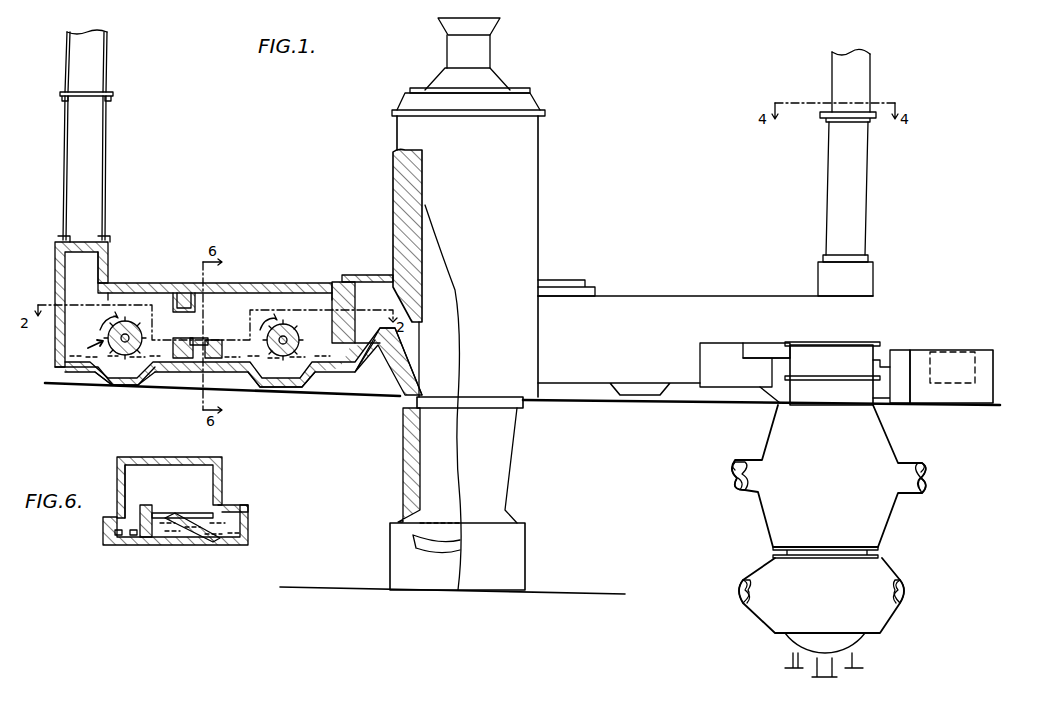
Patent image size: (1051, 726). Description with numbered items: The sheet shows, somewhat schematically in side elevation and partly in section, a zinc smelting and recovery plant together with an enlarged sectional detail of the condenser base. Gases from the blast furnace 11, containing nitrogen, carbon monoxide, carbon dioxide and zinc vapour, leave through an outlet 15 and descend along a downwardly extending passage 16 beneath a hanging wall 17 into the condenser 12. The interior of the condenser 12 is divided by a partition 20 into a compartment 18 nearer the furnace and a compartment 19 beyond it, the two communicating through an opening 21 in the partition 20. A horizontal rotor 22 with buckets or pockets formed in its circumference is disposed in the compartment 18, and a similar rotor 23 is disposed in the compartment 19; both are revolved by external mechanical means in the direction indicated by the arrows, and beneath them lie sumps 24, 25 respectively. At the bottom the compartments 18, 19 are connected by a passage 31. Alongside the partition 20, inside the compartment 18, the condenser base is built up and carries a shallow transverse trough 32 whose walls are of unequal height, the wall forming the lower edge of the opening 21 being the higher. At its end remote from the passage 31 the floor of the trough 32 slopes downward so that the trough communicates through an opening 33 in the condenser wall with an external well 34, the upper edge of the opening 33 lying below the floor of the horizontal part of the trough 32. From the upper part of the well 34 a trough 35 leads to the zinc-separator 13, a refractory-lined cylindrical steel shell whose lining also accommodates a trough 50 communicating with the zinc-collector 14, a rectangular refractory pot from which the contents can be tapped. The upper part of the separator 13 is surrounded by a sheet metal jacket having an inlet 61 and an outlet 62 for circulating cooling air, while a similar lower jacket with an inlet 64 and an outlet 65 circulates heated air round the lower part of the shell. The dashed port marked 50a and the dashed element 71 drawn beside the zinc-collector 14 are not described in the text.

In FIG. 1, the blast furnace 11 is at (544, 160).
In FIG. 6, the condenser 12 is at (161, 457).
In FIG. 1, the zinc-separator 13 is at (758, 515).
In FIG. 1, the zinc-collector 14 is at (1000, 370).
In FIG. 1, the outlet 15 is at (396, 340).
In FIG. 1, the downwardly extending passage 16 is at (358, 338).
In FIG. 1, the hanging wall 17 is at (336, 281).
In FIG. 1, the compartment 18 is at (270, 300).
In FIG. 6, the compartment 18 is at (135, 475).
In FIG. 1, the compartment 19 is at (110, 290).
In FIG. 1, the partition 20 is at (185, 302).
In FIG. 1, the opening 21 is at (180, 338).
In FIG. 1, the horizontal rotor 22 is at (296, 346).
In FIG. 1, the rotor 23 is at (110, 333).
In FIG. 1, the sump 24 is at (285, 370).
In FIG. 1, the sump 25 is at (115, 382).
In FIG. 6, the passage 31 is at (132, 536).
In FIG. 1, the shallow transverse trough 32 is at (216, 336).
In FIG. 6, the shallow transverse trough 32 is at (160, 520).
In FIG. 6, the opening 33 is at (215, 538).
In FIG. 1, the external well 34 is at (739, 375).
In FIG. 6, the external well 34 is at (232, 508).
In FIG. 1, the trough 35 is at (757, 352).
In FIG. 1, the trough 50 is at (897, 357).
In FIG. 1, the valve port 50a is at (880, 360).
In FIG. 1, the inlet 61 is at (735, 465).
In FIG. 1, the outlet 62 is at (922, 470).
In FIG. 1, the inlet 64 is at (745, 587).
In FIG. 1, the outlet 65 is at (905, 594).
In FIG. 1, the chamber 71 is at (952, 360).